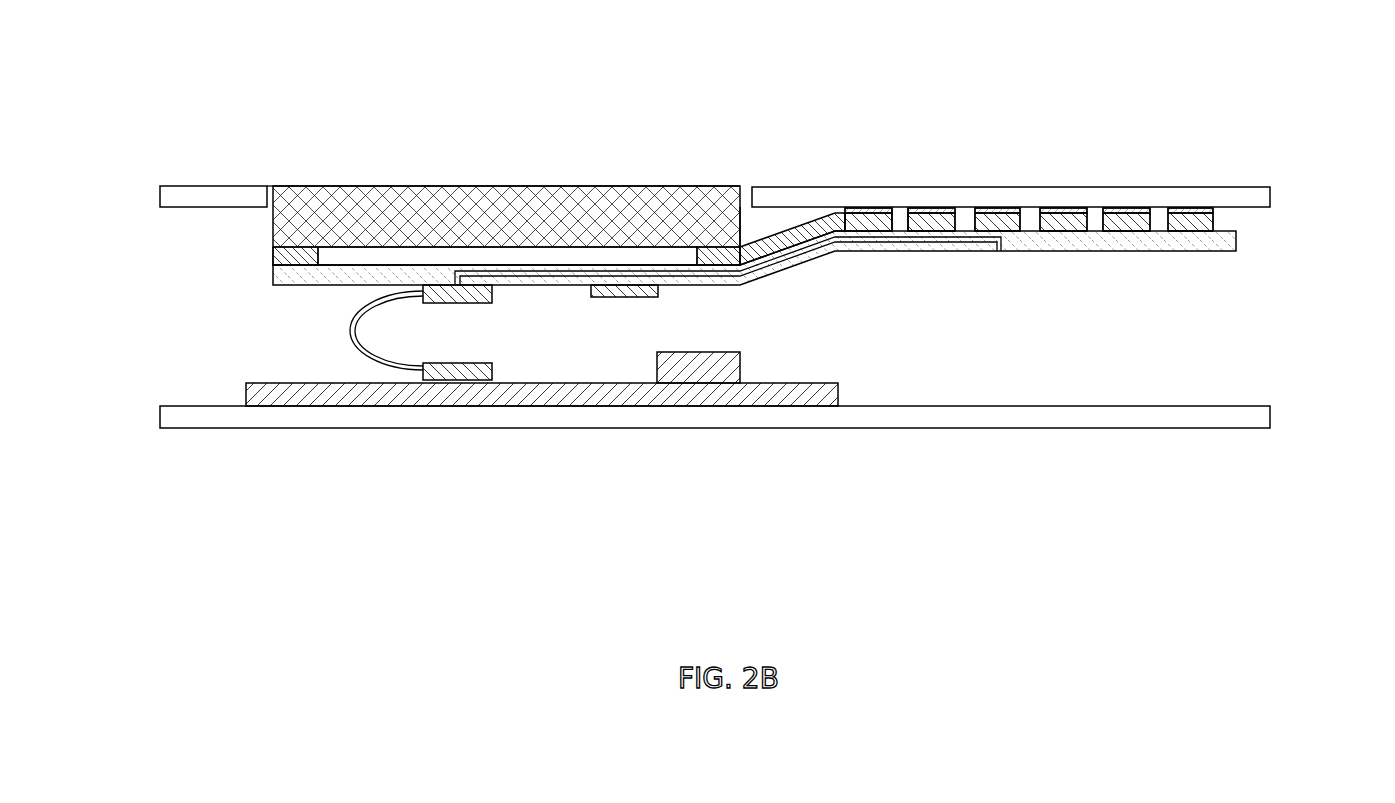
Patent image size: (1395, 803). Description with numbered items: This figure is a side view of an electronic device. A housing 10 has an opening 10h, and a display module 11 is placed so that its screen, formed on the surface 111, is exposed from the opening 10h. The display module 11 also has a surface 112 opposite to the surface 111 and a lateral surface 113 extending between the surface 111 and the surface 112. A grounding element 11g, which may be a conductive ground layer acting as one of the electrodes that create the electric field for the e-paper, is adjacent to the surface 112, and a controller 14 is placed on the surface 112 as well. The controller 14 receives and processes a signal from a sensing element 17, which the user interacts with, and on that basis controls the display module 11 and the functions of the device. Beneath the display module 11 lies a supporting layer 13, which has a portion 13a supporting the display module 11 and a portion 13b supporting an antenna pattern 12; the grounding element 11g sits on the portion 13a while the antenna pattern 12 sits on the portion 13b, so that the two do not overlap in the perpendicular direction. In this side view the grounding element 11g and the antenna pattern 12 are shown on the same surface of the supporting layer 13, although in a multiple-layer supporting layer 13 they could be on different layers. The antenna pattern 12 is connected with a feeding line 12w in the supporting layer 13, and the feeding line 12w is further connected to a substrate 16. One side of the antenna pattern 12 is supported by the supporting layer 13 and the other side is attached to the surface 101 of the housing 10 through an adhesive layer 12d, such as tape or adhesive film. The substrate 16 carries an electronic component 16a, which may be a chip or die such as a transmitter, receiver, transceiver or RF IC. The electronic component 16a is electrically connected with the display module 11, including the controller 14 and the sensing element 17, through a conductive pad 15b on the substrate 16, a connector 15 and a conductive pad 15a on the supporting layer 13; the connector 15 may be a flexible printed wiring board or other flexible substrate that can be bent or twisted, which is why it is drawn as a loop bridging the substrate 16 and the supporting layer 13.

The housing 10 is at (213, 202).
The opening 10h is at (705, 168).
The display module 11 is at (392, 202).
The surface 111 is at (482, 186).
The surface 112 is at (698, 248).
The surface 113 is at (742, 216).
The grounding element 11g is at (282, 258).
The sensing element 17 is at (338, 255).
The antenna pattern 12 is at (1205, 227).
The adhesive layer 12d is at (1207, 210).
The feeding line 12w is at (903, 242).
The surface 101 is at (1015, 187).
The supporting layer 13 is at (728, 301).
The portion 13a is at (717, 278).
The portion 13b is at (953, 242).
The controller 14 is at (628, 294).
The connector 15 is at (352, 333).
The conductive pad 15a is at (482, 292).
The conductive pad 15b is at (482, 371).
The substrate 16 is at (258, 393).
The electronic component 16a is at (725, 368).